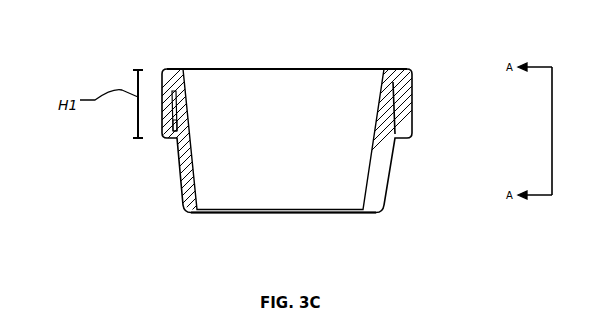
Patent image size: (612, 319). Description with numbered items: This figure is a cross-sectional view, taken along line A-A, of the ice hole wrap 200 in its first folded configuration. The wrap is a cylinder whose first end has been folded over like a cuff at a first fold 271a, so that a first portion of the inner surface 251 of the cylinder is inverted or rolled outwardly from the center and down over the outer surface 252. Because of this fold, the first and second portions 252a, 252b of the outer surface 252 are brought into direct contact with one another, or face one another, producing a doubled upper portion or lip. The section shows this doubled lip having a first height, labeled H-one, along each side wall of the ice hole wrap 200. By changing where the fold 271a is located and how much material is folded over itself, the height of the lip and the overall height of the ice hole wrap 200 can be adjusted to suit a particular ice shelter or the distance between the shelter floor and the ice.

The ice hole wrap 200 is at (170, 38).
The inner surface 251 is at (363, 68).
The outer surface 252 is at (387, 167).
The first portion of the outer surface 252a is at (173, 94).
The second portion of the outer surface 252b is at (177, 128).
The first fold 271a is at (404, 68).